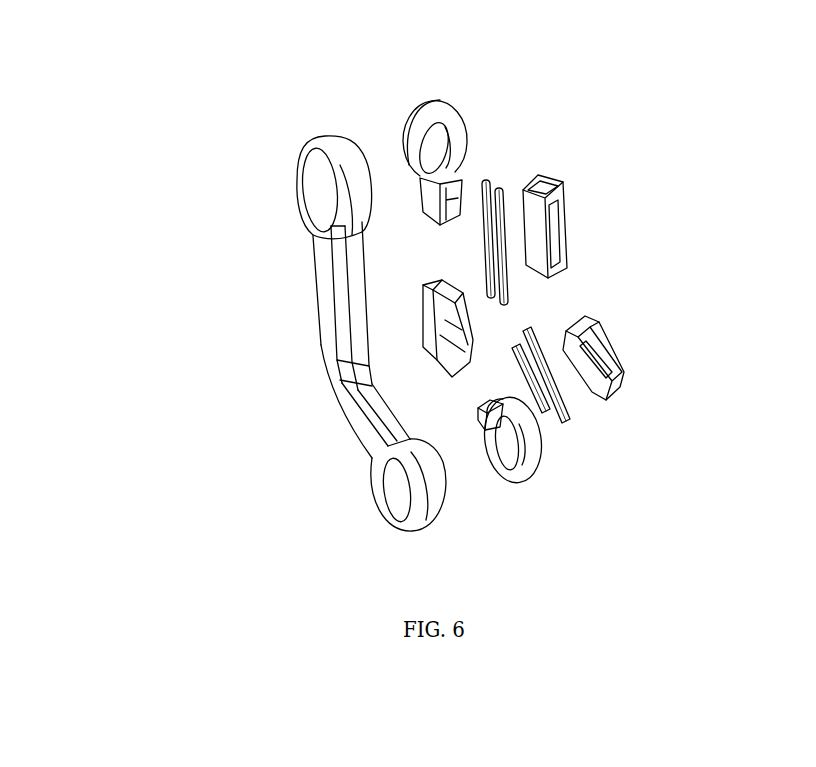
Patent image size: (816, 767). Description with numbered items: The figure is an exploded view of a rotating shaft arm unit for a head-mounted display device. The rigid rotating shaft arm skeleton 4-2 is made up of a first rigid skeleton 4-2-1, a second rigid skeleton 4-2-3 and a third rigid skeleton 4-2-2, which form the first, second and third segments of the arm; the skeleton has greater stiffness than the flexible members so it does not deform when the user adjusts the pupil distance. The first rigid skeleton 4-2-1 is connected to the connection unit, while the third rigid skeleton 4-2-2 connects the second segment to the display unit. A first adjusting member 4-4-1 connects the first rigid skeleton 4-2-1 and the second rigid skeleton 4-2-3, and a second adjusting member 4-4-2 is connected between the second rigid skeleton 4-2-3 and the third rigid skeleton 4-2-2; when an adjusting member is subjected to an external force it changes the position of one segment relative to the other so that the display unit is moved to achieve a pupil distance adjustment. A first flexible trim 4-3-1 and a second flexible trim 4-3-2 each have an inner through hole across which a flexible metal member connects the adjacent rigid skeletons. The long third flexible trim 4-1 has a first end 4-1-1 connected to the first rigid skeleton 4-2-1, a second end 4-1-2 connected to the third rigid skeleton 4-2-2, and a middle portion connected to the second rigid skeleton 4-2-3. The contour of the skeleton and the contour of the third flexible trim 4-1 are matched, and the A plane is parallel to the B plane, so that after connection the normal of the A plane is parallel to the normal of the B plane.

The third flexible trim 4-1 is at (334, 306).
The first end of the third flexible trim 4-1-1 is at (322, 172).
The second end of the third flexible trim 4-1-2 is at (418, 486).
The rotating shaft arm skeleton 4-2 is at (162, 63).
The first rigid skeleton 4-2-1 is at (422, 153).
The third rigid skeleton 4-2-2 is at (480, 412).
The second rigid skeleton 4-2-3 is at (425, 291).
The first flexible trim 4-3-1 is at (552, 232).
The second flexible trim 4-3-2 is at (602, 338).
The first adjusting member 4-4-1 is at (507, 235).
The second adjusting member 4-4-2 is at (560, 420).
The A plane A is at (383, 462).
The B plane B is at (464, 110).